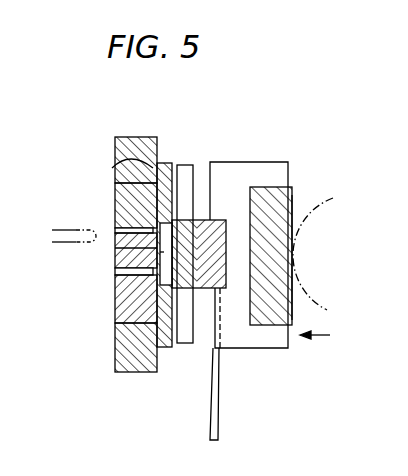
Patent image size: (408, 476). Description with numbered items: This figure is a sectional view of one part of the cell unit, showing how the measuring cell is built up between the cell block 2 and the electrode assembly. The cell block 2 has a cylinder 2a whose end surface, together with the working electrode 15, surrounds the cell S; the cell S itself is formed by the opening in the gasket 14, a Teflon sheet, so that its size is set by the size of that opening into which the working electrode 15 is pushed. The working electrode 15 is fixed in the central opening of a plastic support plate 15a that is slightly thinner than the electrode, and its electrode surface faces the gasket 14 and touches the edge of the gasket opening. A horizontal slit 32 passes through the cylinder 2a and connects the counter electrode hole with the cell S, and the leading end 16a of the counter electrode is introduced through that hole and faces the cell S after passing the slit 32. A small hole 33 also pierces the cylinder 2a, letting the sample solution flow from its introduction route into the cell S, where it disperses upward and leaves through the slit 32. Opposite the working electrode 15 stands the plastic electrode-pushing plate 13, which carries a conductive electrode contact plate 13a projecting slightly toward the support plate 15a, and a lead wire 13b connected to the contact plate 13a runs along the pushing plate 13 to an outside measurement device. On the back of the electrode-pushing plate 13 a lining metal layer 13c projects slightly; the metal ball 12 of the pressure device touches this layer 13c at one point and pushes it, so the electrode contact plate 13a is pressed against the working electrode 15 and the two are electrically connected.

The cell block 2 is at (125, 349).
The cylinder 2a is at (127, 312).
The gasket 14 is at (118, 163).
The slit 32 is at (140, 232).
The small hole 33 is at (120, 296).
The cell S is at (117, 248).
The leading end of counter electrode 16a is at (65, 230).
The working electrode 15 is at (183, 274).
The support plate 15a is at (192, 172).
The electrode-pushing plate 13 is at (243, 182).
The electrode contact plate 13a is at (224, 262).
The lead wire 13b is at (210, 410).
The lining metal layer 13c is at (295, 203).
The ball 12 is at (305, 255).